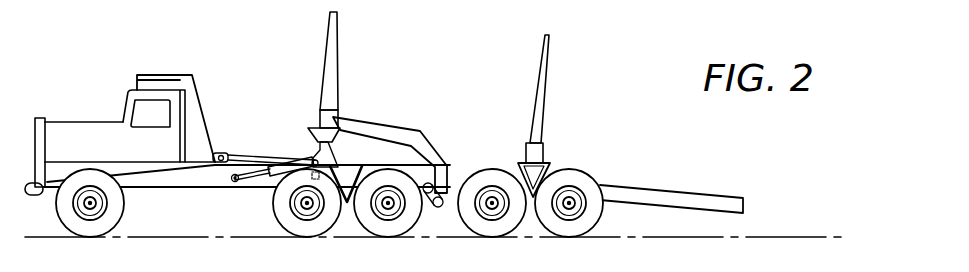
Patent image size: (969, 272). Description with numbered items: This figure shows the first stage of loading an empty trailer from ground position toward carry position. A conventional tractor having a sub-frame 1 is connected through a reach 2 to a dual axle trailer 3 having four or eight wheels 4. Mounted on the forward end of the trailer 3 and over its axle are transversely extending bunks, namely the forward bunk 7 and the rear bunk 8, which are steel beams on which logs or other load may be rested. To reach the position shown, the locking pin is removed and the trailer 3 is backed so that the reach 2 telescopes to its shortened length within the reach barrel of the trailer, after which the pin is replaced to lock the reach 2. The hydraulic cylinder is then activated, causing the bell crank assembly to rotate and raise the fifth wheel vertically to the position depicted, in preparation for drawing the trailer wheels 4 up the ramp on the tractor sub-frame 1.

The sub-frame 1 is at (207, 176).
The reach 2 is at (417, 137).
The dual axle trailer 3 is at (600, 191).
The wheels 4 is at (498, 227).
The forward bunk 7 is at (327, 118).
The rear bunk 8 is at (540, 152).